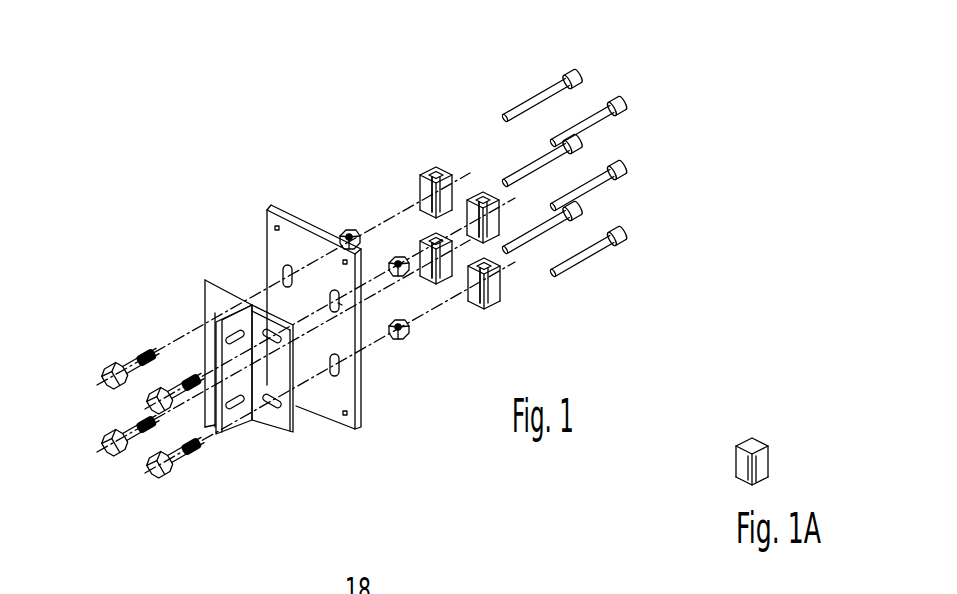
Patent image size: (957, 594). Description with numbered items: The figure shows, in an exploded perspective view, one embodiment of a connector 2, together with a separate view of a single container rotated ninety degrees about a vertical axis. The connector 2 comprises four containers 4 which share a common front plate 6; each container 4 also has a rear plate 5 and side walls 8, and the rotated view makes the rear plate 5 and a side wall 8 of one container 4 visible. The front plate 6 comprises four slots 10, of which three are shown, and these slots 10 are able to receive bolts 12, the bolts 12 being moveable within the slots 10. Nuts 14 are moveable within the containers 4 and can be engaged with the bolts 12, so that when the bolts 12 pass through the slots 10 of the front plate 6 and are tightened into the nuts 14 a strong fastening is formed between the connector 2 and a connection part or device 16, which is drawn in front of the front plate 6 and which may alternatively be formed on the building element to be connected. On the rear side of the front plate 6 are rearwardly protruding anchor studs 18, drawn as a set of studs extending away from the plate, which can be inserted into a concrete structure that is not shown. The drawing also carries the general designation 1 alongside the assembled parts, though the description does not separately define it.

In FIG. 1, the mounting assembly 1 is at (342, 305).
In FIG. 1, the connector 2 is at (304, 148).
In FIG. 1, the container 4 is at (434, 166).
In FIG. 1A, the container 4 is at (752, 430).
In FIG. 1A, the rear plate 5 is at (758, 467).
In FIG. 1, the front plate 6 is at (278, 242).
In FIG. 1, the side wall 8 is at (452, 198).
In FIG. 1A, the side wall 8 is at (743, 467).
In FIG. 1, the slot 10 is at (284, 274).
In FIG. 1, the bolt 12 is at (103, 372).
In FIG. 1, the nut 14 is at (352, 228).
In FIG. 1, the connection part or device 16 is at (281, 418).
In FIG. 1, the anchor stud 18 is at (575, 66).